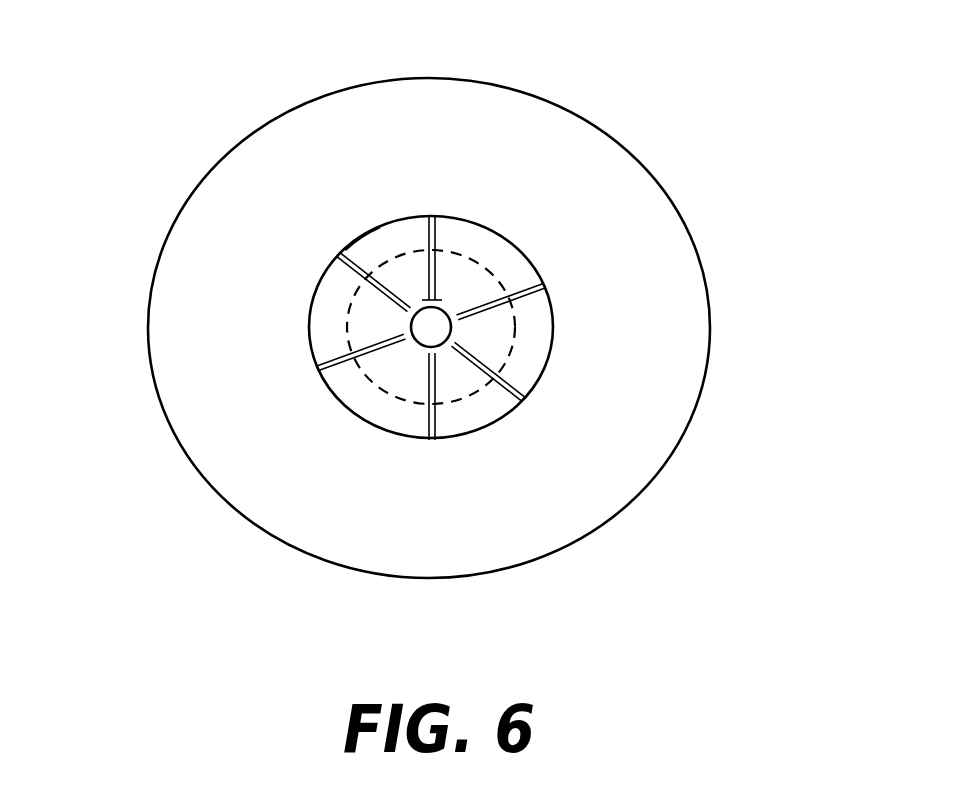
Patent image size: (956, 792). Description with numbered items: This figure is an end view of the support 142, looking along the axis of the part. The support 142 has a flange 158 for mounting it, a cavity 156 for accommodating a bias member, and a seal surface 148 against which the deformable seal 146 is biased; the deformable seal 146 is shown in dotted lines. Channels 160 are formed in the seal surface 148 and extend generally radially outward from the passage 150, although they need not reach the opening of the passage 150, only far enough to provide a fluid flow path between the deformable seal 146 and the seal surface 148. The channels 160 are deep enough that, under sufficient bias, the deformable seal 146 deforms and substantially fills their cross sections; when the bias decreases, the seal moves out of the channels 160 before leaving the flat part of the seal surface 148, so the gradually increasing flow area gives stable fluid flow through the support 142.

The support 142 is at (156, 189).
The deformable seal 146 is at (454, 395).
The seal surface 148 is at (483, 248).
The passage 150 is at (457, 332).
The cavity 156 is at (363, 233).
The flange 158 is at (682, 350).
The channels 160 is at (365, 279).